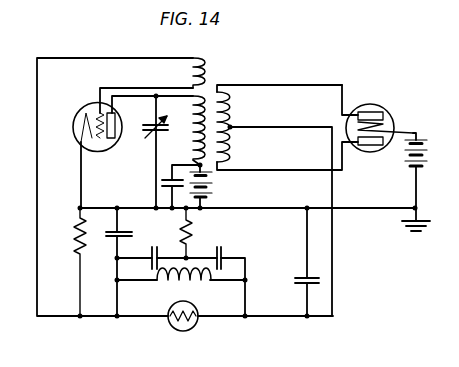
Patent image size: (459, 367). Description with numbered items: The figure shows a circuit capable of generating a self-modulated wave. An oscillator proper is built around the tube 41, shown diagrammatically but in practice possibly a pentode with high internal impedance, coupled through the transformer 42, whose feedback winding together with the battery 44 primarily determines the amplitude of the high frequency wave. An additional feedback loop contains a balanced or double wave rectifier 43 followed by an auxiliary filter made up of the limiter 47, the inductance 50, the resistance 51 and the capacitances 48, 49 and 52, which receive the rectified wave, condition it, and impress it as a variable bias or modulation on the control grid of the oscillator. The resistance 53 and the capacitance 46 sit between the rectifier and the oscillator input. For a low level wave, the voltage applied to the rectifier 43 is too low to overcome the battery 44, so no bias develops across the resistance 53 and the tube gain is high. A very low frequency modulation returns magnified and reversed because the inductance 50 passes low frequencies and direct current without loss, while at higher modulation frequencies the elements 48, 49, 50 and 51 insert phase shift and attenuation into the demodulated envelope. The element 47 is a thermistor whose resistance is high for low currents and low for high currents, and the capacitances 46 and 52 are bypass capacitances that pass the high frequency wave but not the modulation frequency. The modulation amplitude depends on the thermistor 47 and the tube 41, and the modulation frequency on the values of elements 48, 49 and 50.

The tube 41 is at (86, 104).
The transformer 42 is at (212, 93).
The double wave rectifier 43 is at (370, 103).
The battery 44 is at (407, 155).
The capacitance 46 is at (294, 279).
The thermistor 47 is at (199, 309).
The capacitance 48 is at (225, 233).
The capacitance 49 is at (157, 233).
The inductance 50 is at (166, 289).
The resistance 51 is at (193, 244).
The capacitance 52 is at (132, 232).
The resistance 53 is at (74, 236).